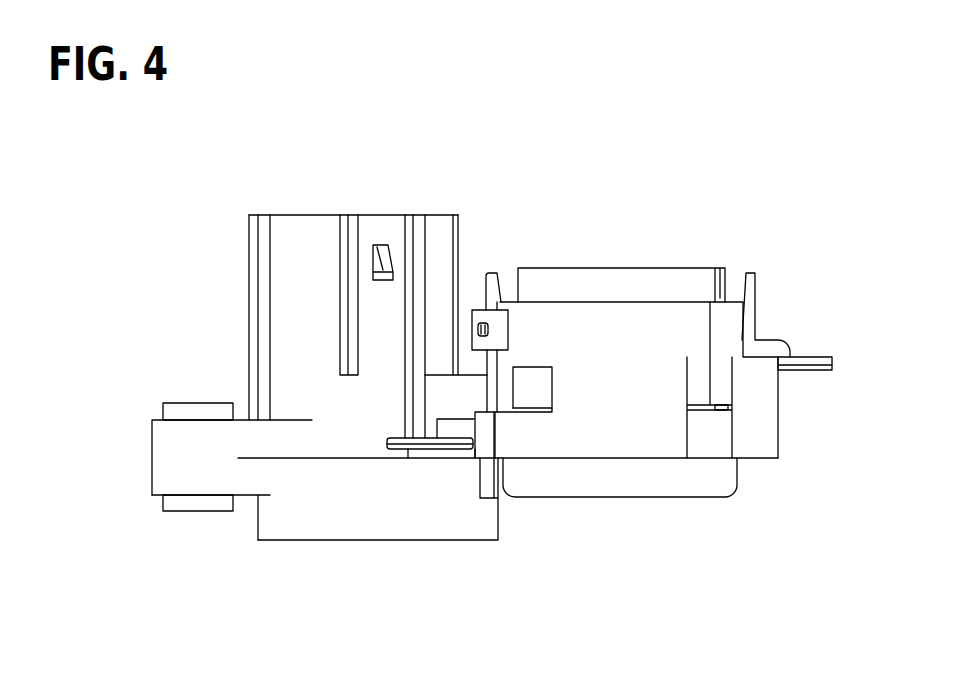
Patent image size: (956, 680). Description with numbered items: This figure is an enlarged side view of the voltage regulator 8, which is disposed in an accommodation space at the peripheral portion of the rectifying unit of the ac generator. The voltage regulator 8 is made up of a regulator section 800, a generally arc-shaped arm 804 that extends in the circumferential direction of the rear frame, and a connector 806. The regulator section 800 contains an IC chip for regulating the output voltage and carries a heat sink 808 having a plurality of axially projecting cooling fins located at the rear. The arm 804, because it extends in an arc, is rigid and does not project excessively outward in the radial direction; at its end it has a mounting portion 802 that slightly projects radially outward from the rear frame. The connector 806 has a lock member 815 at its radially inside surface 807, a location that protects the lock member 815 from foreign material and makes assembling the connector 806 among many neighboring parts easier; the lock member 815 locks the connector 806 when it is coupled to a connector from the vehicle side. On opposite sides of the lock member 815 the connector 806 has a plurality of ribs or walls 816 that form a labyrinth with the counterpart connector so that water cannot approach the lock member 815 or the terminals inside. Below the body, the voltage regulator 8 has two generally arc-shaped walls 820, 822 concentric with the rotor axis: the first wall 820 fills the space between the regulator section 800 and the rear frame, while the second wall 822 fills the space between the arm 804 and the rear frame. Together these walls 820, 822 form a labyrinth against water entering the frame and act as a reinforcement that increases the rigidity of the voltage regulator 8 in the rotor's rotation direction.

The voltage regulator 8 is at (535, 140).
The regulator section 800 is at (657, 340).
The mounting portion 802 is at (198, 478).
The arc-shaped arm 804 is at (262, 477).
The connector 806 is at (292, 215).
The radially inside surface 807 is at (372, 215).
The heat sink 808 is at (622, 280).
The lock member 815 is at (388, 215).
The ribs or walls 816 is at (250, 252).
The first wall 820 is at (627, 483).
The second wall 822 is at (415, 513).